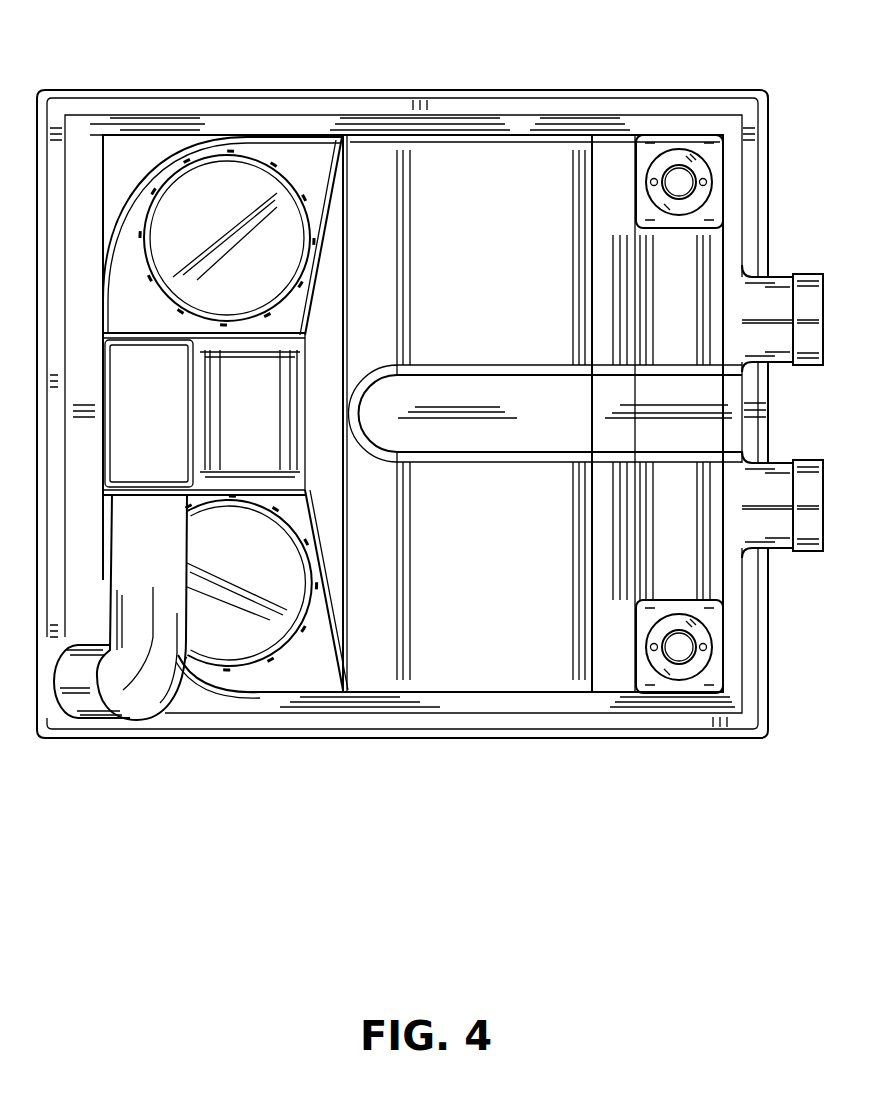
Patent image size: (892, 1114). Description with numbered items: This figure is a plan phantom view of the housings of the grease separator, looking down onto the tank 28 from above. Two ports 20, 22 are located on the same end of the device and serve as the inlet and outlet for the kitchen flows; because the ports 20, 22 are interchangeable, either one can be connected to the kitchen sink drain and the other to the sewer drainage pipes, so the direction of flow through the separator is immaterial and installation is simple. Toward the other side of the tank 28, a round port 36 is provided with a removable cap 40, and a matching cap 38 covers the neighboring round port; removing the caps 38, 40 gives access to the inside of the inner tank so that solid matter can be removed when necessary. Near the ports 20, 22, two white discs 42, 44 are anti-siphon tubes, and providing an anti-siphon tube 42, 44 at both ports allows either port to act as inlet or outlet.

The tank 28 is at (120, 100).
The removable cap 38 is at (205, 183).
The round port 36 is at (310, 567).
The removable cap 40 is at (207, 648).
The anti-siphon tube 42 is at (672, 158).
The anti-siphon tube 44 is at (672, 668).
The port 22 is at (772, 295).
The port 20 is at (806, 550).